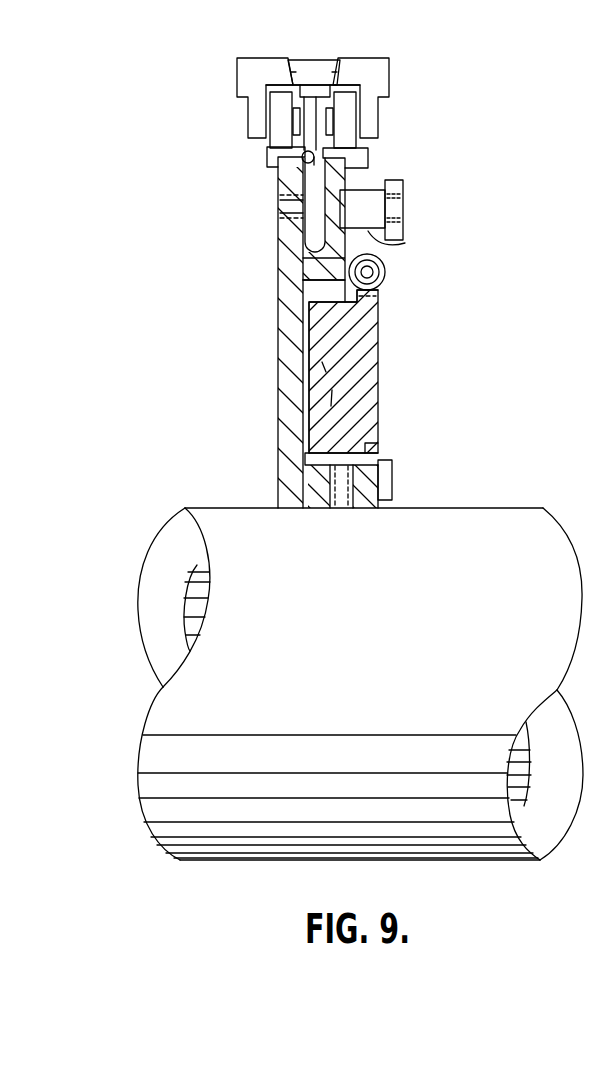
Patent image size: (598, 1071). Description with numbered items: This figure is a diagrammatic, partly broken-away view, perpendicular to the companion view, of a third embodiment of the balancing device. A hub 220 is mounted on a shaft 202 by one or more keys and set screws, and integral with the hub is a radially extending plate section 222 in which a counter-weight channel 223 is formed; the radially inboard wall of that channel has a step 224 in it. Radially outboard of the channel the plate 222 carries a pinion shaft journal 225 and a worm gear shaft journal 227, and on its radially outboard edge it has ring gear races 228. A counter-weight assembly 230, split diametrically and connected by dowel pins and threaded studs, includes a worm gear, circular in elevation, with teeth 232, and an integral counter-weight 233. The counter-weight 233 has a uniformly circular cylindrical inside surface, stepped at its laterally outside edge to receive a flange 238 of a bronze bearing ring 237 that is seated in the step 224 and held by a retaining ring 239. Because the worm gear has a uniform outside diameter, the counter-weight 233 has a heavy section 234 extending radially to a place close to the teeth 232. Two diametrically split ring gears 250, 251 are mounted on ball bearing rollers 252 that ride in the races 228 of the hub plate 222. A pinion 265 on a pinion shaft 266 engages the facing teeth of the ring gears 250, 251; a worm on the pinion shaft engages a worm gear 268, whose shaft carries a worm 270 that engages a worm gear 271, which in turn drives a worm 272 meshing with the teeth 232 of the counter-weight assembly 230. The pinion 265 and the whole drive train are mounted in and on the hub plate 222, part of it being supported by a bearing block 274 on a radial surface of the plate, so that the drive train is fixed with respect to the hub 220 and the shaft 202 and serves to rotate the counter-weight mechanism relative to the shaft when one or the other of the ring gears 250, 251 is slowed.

The shaft 202 is at (483, 528).
The hub 220 is at (294, 472).
The plate section 222 is at (299, 328).
The counter-weight channel 223 is at (309, 294).
The step 224 is at (327, 461).
The pinion shaft journal 225 is at (300, 166).
The worm gear shaft journal 227 is at (283, 208).
The ring gear races 228 is at (268, 148).
The counter-weight assembly 230 is at (384, 348).
The teeth 232 is at (380, 294).
The counter-weight 233 is at (320, 399).
The heavy section 234 is at (324, 366).
The bronze bearing ring 237 is at (348, 458).
The flange 238 is at (380, 452).
The retaining ring 239 is at (393, 478).
The ring gear 250 is at (250, 86).
The ring gear 251 is at (384, 99).
The ball bearing rollers 252 is at (285, 116).
The pinion 265 is at (314, 72).
The pinion shaft 266 is at (316, 105).
The worm gear 268 is at (315, 228).
The worm 270 is at (355, 188).
The worm gear 271 is at (383, 249).
The worm 272 is at (384, 278).
The bearing block 274 is at (403, 227).